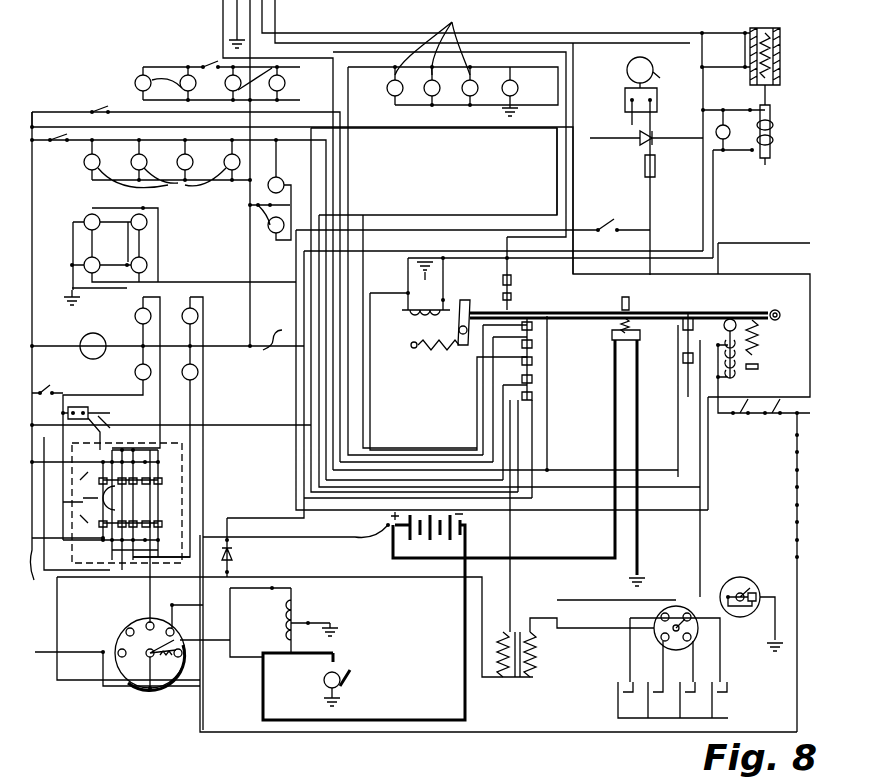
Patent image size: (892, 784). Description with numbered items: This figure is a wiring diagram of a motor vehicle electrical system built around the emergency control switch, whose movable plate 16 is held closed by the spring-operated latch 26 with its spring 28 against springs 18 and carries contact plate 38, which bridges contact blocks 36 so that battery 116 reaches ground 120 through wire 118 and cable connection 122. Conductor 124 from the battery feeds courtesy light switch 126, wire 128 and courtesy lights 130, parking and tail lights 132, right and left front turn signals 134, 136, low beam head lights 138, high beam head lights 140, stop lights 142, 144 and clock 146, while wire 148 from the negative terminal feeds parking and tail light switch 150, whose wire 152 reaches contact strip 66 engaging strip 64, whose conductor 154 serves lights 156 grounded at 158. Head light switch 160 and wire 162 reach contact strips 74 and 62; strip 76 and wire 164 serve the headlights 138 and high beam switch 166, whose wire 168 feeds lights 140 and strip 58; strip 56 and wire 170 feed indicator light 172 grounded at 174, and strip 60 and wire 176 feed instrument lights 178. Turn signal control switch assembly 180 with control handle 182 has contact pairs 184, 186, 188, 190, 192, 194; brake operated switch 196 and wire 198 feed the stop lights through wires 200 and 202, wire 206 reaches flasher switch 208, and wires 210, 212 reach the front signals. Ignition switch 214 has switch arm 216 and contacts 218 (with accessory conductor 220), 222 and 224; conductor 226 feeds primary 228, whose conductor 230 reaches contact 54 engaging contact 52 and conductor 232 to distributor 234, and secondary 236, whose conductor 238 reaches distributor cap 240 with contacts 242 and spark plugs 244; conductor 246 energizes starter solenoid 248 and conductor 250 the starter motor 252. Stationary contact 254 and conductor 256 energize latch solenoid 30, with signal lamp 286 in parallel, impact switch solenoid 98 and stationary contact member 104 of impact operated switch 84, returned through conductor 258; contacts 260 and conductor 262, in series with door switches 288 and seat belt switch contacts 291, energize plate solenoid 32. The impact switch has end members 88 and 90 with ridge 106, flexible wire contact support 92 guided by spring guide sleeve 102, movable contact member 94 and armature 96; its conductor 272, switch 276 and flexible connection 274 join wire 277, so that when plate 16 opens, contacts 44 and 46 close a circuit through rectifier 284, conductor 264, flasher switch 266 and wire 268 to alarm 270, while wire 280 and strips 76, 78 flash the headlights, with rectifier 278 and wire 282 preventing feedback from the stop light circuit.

The movable plate 16 is at (748, 313).
The springs 18 is at (758, 335).
The pivoted latch 26 is at (468, 330).
The spring 28 is at (413, 349).
The latch solenoid 30 is at (426, 285).
The plate solenoid 32 is at (733, 377).
The contact blocks 36 is at (683, 342).
The contact plate 38 is at (627, 316).
The contact 44 is at (502, 285).
The contact 46 is at (510, 297).
The contact 52 is at (546, 314).
The contact 54 is at (533, 326).
The contact strip 56 is at (533, 344).
The contact strip 58 is at (533, 361).
The contact strip 60 is at (533, 379).
The contact strip 62 is at (533, 395).
The contact strip 64 is at (535, 400).
The contact strip 66 is at (547, 452).
The contact strip 74 is at (639, 325).
The contact strip 76 is at (637, 342).
The contact strip 78 is at (685, 365).
The impact operated switch 84 is at (773, 87).
The end member 88 is at (754, 93).
The end member 90 is at (765, 28).
The flexible wire contact support 92 is at (770, 112).
The movable contact member 94 is at (773, 28).
The armature 96 is at (771, 142).
The impact switch solenoid 98 is at (768, 162).
The spring guide sleeve 102 is at (748, 84).
The stationary contact member 104 is at (780, 57).
The ridge 106 is at (750, 29).
The battery 116 is at (455, 541).
The wire 118 is at (476, 560).
The motor vehicle ground 120 is at (645, 578).
The cable connection 122 is at (643, 531).
The electric conductor 124 is at (382, 545).
The courtesy light switch 126 is at (268, 225).
The wire 128 is at (250, 205).
The courtesy lights 130 is at (282, 186).
The parking and tail lights 132 is at (167, 184).
The right front turn signal 134 is at (198, 316).
The left front turn signal 136 is at (198, 372).
The low beam head lights 138 is at (300, 30).
The high beam head lights 140 is at (182, 82).
The right stop light 142 is at (135, 317).
The left stop light 144 is at (135, 373).
The clock 146 is at (80, 345).
The wire 148 is at (32, 112).
The parking and tail light switch 150 is at (68, 148).
The wire 152 is at (341, 290).
The conductor 154 is at (160, 283).
The lights 156 is at (115, 242).
The ground connection 158 is at (70, 275).
The head light switch 160 is at (102, 110).
The wire 162 is at (343, 208).
The wire 164 is at (340, 190).
The high beam switch 166 is at (213, 65).
The wire 168 is at (348, 165).
The wire 170 is at (513, 110).
The high beam indicator light 172 is at (530, 90).
The ground connection 174 is at (420, 118).
The wire connection 176 is at (372, 119).
The instrument lights 178 is at (444, 42).
The turn signal control switch assembly 180 is at (92, 590).
The control handle 182 is at (114, 498).
The pair of switch contacts 184 is at (173, 473).
The pair of switch contacts 186 is at (182, 472).
The pair of switch contacts 188 is at (200, 477).
The pair of switch contacts 190 is at (153, 507).
The pair of switch contacts 192 is at (157, 523).
The pair of switch contacts 194 is at (200, 525).
The brake operated switch 196 is at (48, 370).
The wire 198 is at (48, 601).
The wire connection 200 is at (193, 342).
The wire 202 is at (193, 396).
The wire connection 206 is at (110, 413).
The flasher switch 208 is at (92, 409).
The wire 210 is at (222, 395).
The wire 212 is at (193, 422).
The ignition switch 214 is at (153, 688).
The switch arm 216 is at (120, 643).
The contact 218 is at (120, 658).
The conductor 220 is at (36, 655).
The contact 222 is at (228, 638).
The contact 224 is at (180, 675).
The conductor 226 is at (385, 580).
The primary 228 is at (498, 675).
The conductor 230 is at (432, 605).
The conductor 232 is at (580, 620).
The distributor 234 is at (757, 572).
The secondary 236 is at (537, 675).
The conductor 238 is at (547, 636).
The distributor cap 240 is at (696, 642).
The contacts 242 is at (677, 606).
The spark plugs 244 is at (722, 694).
The conductor 246 is at (286, 607).
The starter solenoid 248 is at (296, 607).
The conductor 250 is at (328, 650).
The starter motor 252 is at (314, 682).
The stationary contact 254 is at (150, 612).
The conductor 256 is at (665, 43).
The conductor 258 is at (716, 257).
The contacts 260 is at (182, 600).
The conductor 262 is at (707, 480).
The conductor 264 is at (573, 195).
The flasher switch 266 is at (645, 166).
The wire 268 is at (625, 97).
The alarm 270 is at (640, 60).
The conductor 272 is at (703, 193).
The flexible connection 274 is at (749, 67).
The switch 276 is at (594, 227).
The wire 277 is at (480, 237).
The rectifier 278 is at (637, 135).
The wire 280 is at (713, 216).
The wire 282 is at (548, 172).
The rectifier 284 is at (230, 550).
The signal lamp 286 is at (716, 156).
The door switches 288 is at (797, 525).
The seat belt switch contacts 291 is at (748, 418).